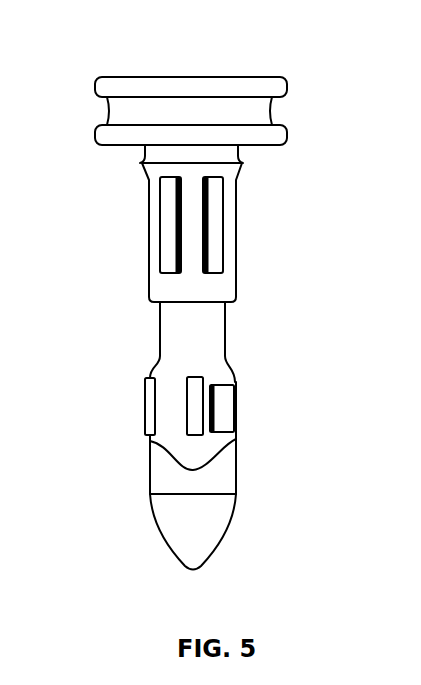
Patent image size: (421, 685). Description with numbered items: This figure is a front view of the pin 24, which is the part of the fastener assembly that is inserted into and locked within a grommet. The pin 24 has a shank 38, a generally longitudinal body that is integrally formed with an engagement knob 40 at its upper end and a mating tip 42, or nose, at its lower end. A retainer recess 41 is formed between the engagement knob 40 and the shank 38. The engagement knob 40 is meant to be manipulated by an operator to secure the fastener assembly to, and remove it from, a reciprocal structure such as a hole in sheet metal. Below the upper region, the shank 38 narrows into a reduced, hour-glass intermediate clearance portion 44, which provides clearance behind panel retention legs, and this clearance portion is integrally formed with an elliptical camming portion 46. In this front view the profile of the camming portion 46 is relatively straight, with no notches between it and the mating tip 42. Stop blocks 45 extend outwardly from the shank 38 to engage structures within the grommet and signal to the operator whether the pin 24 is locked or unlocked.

The pin 24 is at (114, 46).
The engagement knob 40 is at (273, 116).
The retainer recess 41 is at (233, 153).
The shank 38 is at (237, 253).
The intermediate clearance portion 44 is at (213, 340).
The stop blocks 45 is at (145, 405).
The elliptical camming portion 46 is at (225, 410).
The mating tip 42 is at (207, 522).